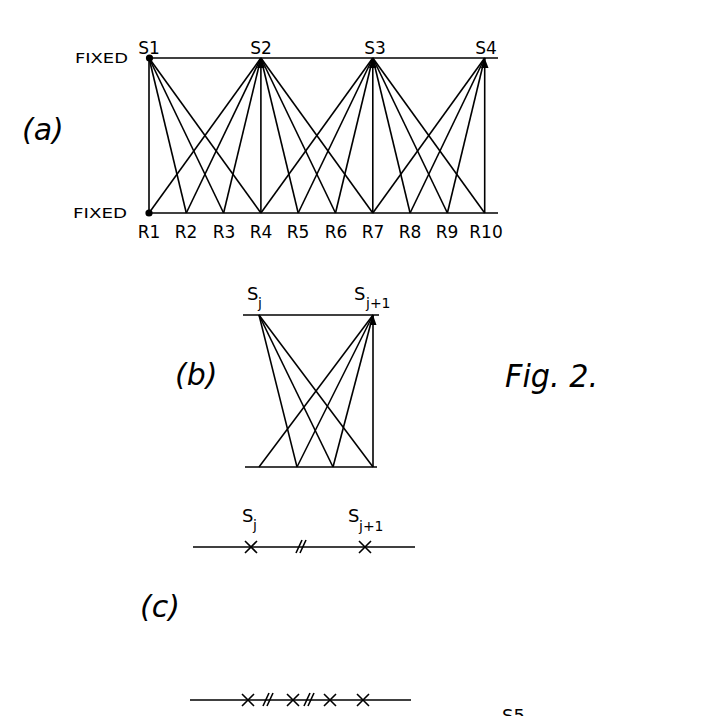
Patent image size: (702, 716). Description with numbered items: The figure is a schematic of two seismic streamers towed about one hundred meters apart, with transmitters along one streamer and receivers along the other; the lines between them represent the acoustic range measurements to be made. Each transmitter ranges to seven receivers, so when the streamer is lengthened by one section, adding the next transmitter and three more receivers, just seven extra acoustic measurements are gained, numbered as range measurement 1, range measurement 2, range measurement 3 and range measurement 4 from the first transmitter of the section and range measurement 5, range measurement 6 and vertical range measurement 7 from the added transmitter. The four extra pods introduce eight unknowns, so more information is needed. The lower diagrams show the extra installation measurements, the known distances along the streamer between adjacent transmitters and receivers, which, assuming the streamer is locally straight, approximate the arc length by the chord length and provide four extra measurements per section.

In FIG. 2B, the range measurement 1 is at (278, 390).
In FIG. 2C, the range measurement 1 is at (308, 534).
In FIG. 2B, the range measurement 2 is at (284, 366).
In FIG. 2C, the range measurement 2 is at (270, 690).
In FIG. 2B, the range measurement 3 is at (294, 362).
In FIG. 2C, the range measurement 3 is at (320, 690).
In FIG. 2B, the range measurement 4 is at (345, 352).
In FIG. 2C, the range measurement 4 is at (354, 690).
In FIG. 2B, the range measurement 5 is at (355, 353).
In FIG. 2B, the range measurement 6 is at (358, 375).
In FIG. 2B, the range measurement 7 is at (374, 402).